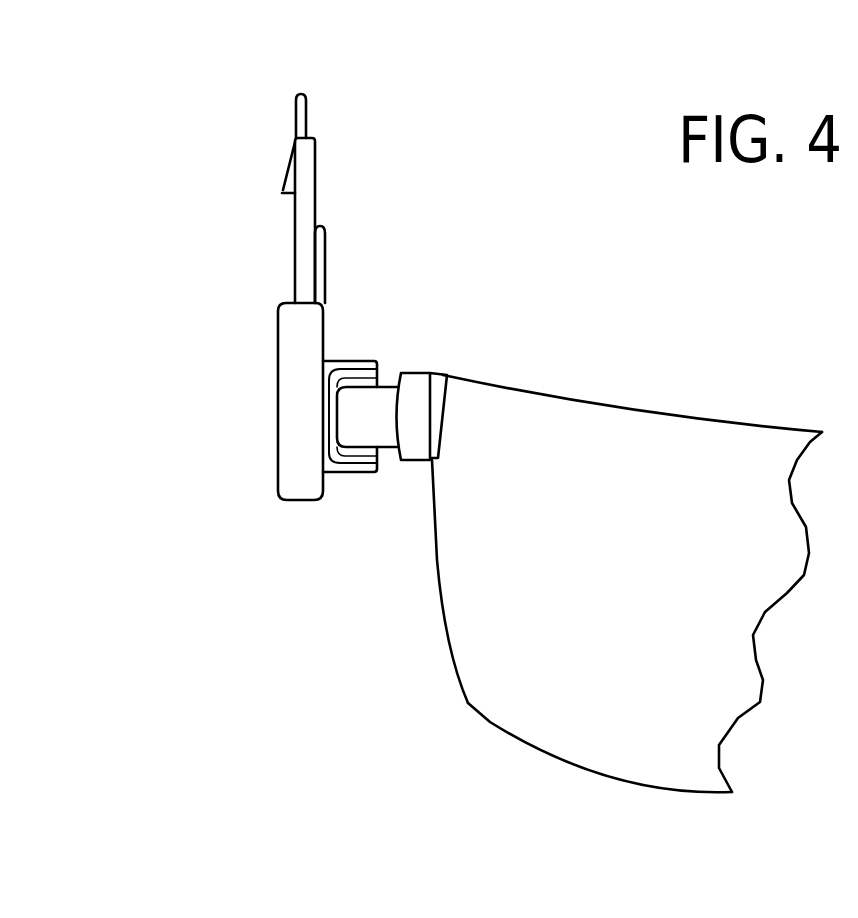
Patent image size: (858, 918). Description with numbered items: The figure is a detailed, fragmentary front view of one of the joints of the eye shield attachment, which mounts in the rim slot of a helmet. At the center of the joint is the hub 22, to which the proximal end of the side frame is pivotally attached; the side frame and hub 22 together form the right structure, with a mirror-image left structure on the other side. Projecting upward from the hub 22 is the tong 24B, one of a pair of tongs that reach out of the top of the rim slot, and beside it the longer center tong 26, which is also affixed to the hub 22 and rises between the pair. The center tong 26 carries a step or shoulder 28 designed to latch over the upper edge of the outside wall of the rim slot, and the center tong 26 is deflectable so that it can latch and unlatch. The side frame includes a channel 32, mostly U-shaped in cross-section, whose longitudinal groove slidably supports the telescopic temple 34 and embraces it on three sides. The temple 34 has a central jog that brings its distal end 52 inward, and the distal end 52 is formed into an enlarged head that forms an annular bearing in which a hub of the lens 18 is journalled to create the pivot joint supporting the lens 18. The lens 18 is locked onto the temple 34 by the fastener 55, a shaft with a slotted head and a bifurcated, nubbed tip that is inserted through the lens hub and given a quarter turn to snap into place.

The lens 18 is at (615, 772).
The hub 22 is at (278, 400).
The tong 24B is at (315, 163).
The center tong 26 is at (308, 98).
The shoulder 28 is at (282, 192).
The channel 32 is at (360, 360).
The telescopic temple 34 is at (383, 385).
The distal end 52 is at (420, 388).
The fastener 55 is at (392, 418).